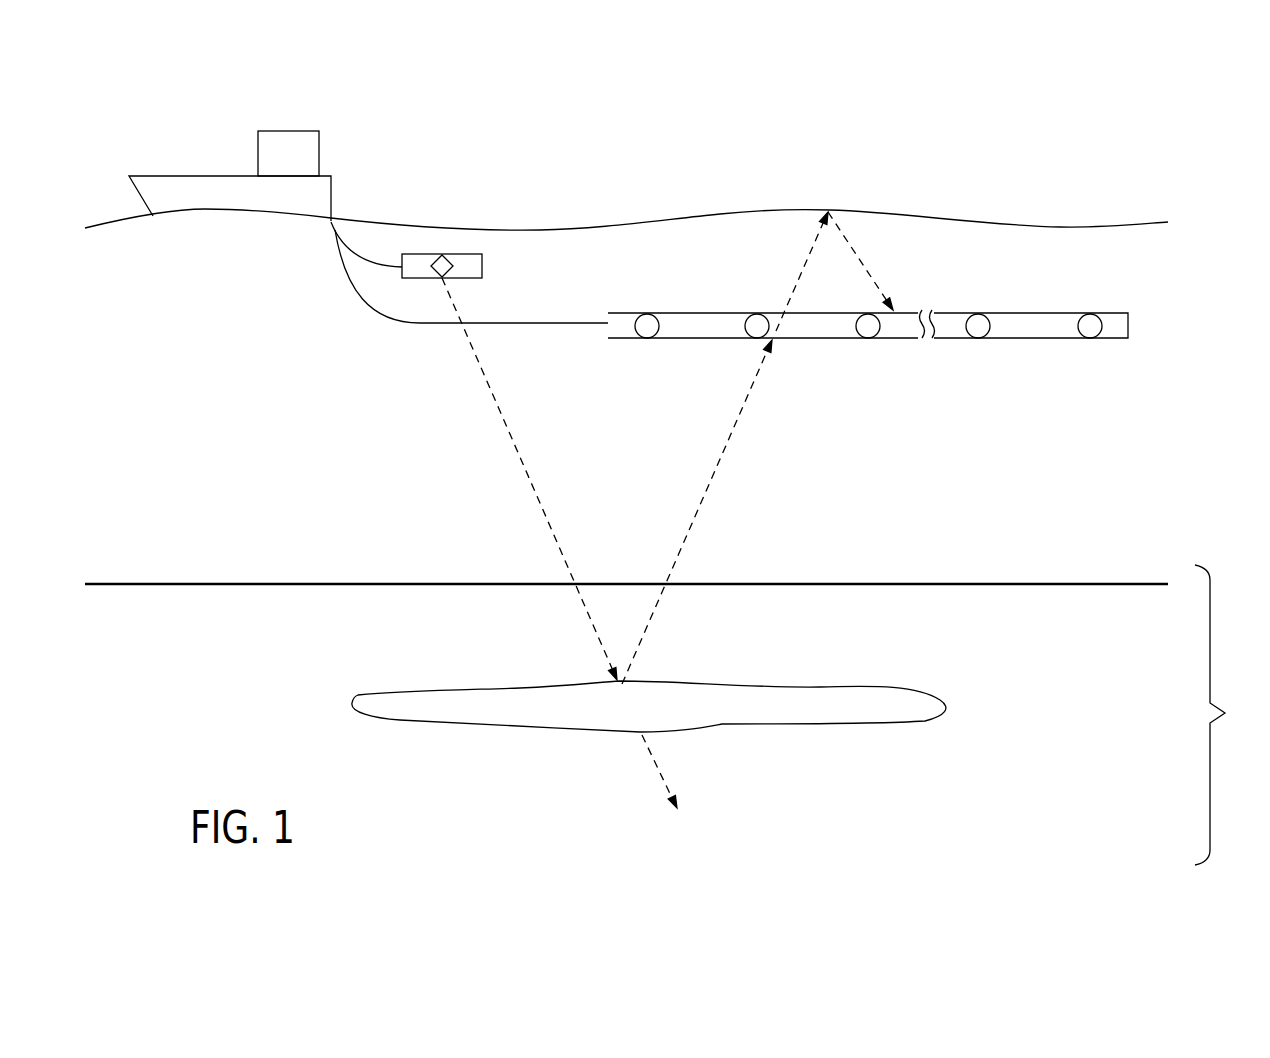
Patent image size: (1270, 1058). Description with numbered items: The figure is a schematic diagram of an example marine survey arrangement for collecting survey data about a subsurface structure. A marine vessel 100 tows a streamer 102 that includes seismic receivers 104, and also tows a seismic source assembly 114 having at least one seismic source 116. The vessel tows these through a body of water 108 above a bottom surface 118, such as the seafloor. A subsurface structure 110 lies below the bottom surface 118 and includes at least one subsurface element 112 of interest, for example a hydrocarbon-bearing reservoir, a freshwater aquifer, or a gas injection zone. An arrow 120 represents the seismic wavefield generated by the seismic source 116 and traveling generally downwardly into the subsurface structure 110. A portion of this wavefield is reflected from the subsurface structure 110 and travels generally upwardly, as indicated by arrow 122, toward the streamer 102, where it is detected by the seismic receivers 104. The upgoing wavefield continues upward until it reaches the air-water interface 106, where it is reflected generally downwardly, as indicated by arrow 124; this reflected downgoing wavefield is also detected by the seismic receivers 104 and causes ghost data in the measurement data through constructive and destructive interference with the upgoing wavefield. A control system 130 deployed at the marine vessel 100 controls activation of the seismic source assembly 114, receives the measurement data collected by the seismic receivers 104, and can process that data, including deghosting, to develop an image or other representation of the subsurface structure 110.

The marine vessel 100 is at (228, 176).
The control system 130 is at (320, 151).
The seismic source assembly 114 is at (482, 262).
The seismic source 116 is at (433, 257).
The air-water interface 106 is at (1040, 228).
The streamer 102 is at (1128, 326).
The seismic receivers 104 is at (755, 322).
The body of water 108 is at (246, 434).
The arrow 120 is at (528, 475).
The arrow 122 is at (695, 517).
The arrow 124 is at (870, 250).
The bottom surface 118 is at (912, 584).
The subsurface element 112 is at (862, 695).
The subsurface structure 110 is at (1230, 715).